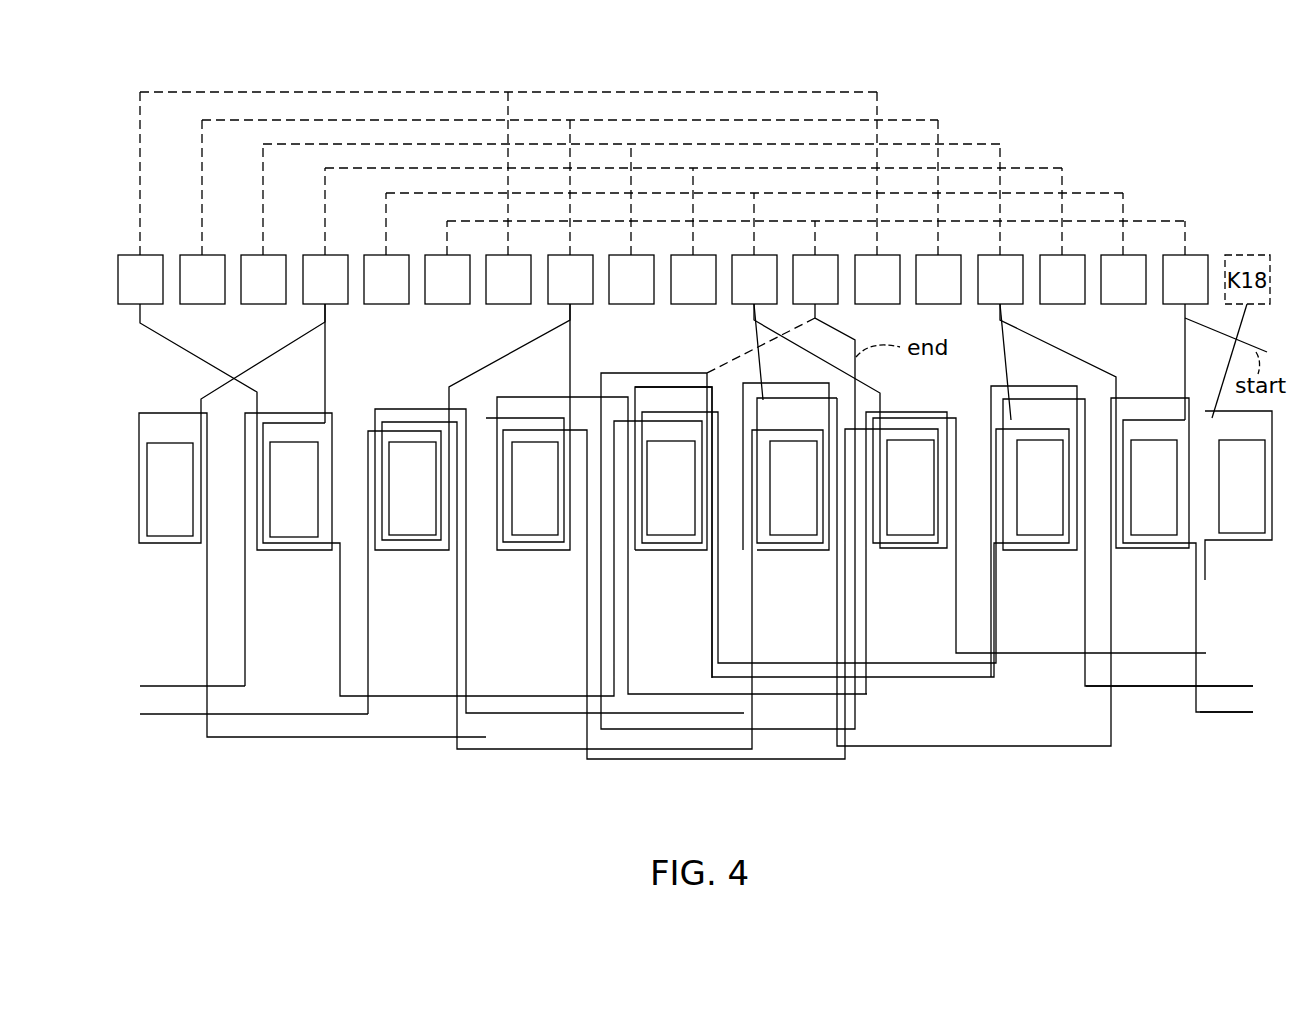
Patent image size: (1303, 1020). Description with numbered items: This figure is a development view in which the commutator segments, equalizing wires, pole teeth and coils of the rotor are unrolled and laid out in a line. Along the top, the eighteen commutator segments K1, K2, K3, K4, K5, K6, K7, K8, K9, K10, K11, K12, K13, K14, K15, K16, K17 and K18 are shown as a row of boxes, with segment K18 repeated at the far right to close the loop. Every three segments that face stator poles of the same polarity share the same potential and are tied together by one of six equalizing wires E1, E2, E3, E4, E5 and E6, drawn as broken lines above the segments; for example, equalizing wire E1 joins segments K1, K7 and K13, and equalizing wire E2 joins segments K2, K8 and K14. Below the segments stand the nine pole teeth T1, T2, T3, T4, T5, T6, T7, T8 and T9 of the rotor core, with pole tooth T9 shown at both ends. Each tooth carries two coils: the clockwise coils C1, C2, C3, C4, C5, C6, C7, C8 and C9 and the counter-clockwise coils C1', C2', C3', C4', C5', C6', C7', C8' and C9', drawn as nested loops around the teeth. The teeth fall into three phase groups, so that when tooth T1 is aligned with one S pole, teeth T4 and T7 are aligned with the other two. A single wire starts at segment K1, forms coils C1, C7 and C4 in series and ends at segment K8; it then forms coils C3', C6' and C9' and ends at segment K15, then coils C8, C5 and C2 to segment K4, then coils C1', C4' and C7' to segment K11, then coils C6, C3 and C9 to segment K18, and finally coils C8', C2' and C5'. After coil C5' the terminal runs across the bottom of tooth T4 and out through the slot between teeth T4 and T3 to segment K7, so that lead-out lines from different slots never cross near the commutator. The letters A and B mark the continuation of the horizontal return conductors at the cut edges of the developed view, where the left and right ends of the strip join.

The commutator segment K1 is at (1185, 262).
The commutator segment K2 is at (1123, 248).
The commutator segment K3 is at (1062, 236).
The commutator segment K4 is at (1000, 224).
The commutator segment K5 is at (938, 212).
The commutator segment K6 is at (877, 198).
The commutator segment K7 is at (815, 262).
The commutator segment K8 is at (754, 248).
The commutator segment K9 is at (693, 236).
The commutator segment K10 is at (631, 224).
The commutator segment K11 is at (570, 212).
The commutator segment K12 is at (508, 198).
The commutator segment K13 is at (447, 262).
The commutator segment K14 is at (386, 248).
The commutator segment K15 is at (325, 236).
The commutator segment K16 is at (263, 224).
The commutator segment K17 is at (202, 212).
The commutator segment K18 is at (140, 198).
The equalizing wire E1 is at (1147, 221).
The equalizing wire E2 is at (1085, 193).
The equalizing wire E3 is at (1025, 168).
The equalizing wire E4 is at (962, 144).
The equalizing wire E5 is at (903, 120).
The equalizing wire E6 is at (848, 92).
The pole tooth T1 is at (1188, 566).
The pole tooth T2 is at (1122, 536).
The pole tooth T3 is at (910, 487).
The pole tooth T4 is at (793, 488).
The pole tooth T5 is at (673, 532).
The pole tooth T6 is at (846, 588).
The pole tooth T7 is at (602, 566).
The pole tooth T8 is at (666, 541).
The pole tooth T9 is at (709, 495).
The coil C1 is at (1133, 572).
The coil C1' is at (1178, 575).
The coil C2 is at (1016, 572).
The coil C2' is at (1062, 576).
The coil C3 is at (891, 572).
The coil C3' is at (936, 576).
The coil C4 is at (771, 572).
The coil C4' is at (816, 576).
The coil C5 is at (647, 572).
The coil C5' is at (694, 576).
The coil C6 is at (506, 572).
The coil C6' is at (556, 576).
The coil C7 is at (389, 572).
The coil C7' is at (434, 576).
The coil C8 is at (267, 572).
The coil C8' is at (314, 576).
The coil C9 is at (1237, 571).
The coil C9' is at (172, 572).
The winding end A is at (193, 714).
The winding end B is at (193, 686).